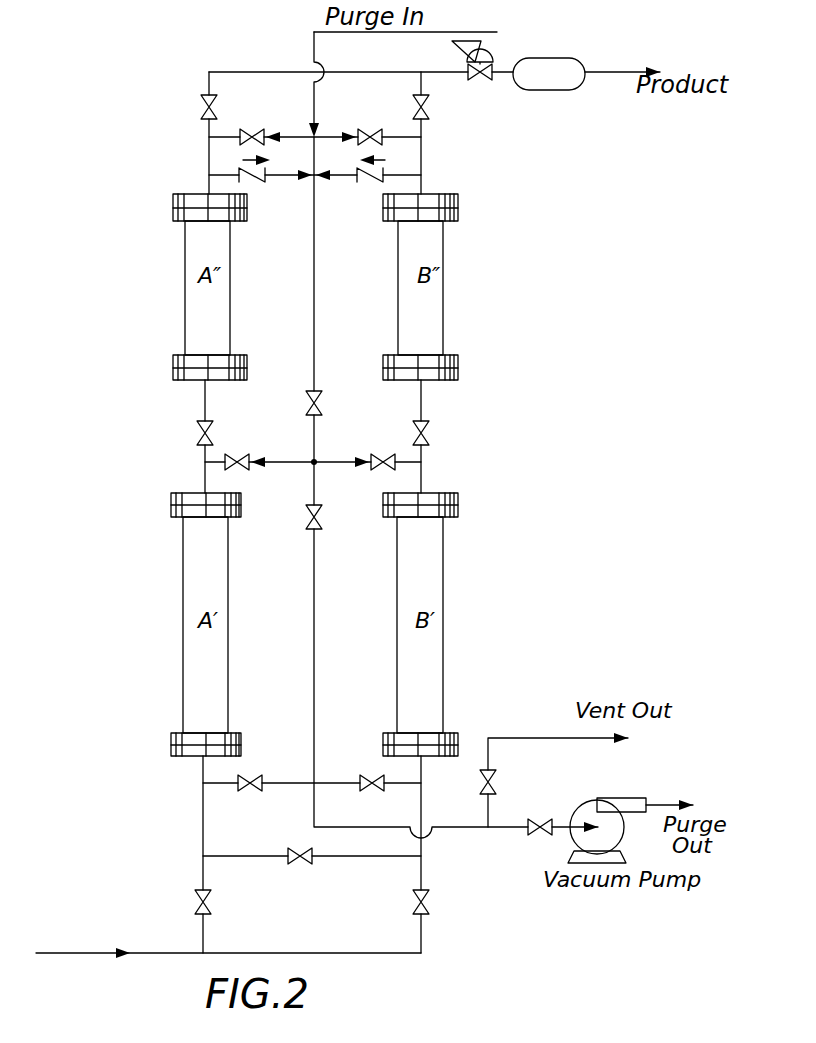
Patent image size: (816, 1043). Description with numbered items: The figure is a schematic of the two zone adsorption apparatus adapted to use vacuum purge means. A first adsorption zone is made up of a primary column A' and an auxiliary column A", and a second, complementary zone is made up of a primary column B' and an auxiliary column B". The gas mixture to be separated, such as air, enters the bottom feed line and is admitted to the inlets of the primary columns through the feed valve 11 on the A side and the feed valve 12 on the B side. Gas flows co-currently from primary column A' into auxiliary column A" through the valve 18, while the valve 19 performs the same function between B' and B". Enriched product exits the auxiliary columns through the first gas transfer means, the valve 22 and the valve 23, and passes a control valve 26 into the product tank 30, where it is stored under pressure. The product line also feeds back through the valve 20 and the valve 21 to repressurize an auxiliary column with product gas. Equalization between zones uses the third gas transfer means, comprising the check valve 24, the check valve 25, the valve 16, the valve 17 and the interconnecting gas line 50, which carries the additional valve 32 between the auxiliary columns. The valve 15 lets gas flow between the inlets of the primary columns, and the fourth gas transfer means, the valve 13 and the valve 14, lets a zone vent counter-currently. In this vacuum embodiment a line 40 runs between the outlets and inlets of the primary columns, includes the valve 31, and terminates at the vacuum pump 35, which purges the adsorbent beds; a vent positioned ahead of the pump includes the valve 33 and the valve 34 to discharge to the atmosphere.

The valve 11 is at (203, 910).
The valve 12 is at (421, 912).
The valve 13 is at (247, 789).
The valve 14 is at (370, 789).
The valve 15 is at (300, 862).
The valve 16 is at (252, 445).
The valve 17 is at (384, 448).
The valve 18 is at (200, 435).
The valve 19 is at (431, 428).
The valve 20 is at (252, 130).
The valve 21 is at (370, 130).
The valve 22 is at (203, 106).
The valve 23 is at (433, 100).
The check valve 24 is at (256, 186).
The check valve 25 is at (371, 186).
The valve 26 is at (481, 80).
The product tank 30 is at (562, 86).
The valve 31 is at (326, 504).
The valve 32 is at (331, 411).
The valve 33 is at (481, 787).
The valve 34 is at (533, 832).
The vacuum pump 35 is at (584, 800).
The line 40 is at (314, 650).
The interconnecting gas line 50 is at (314, 255).